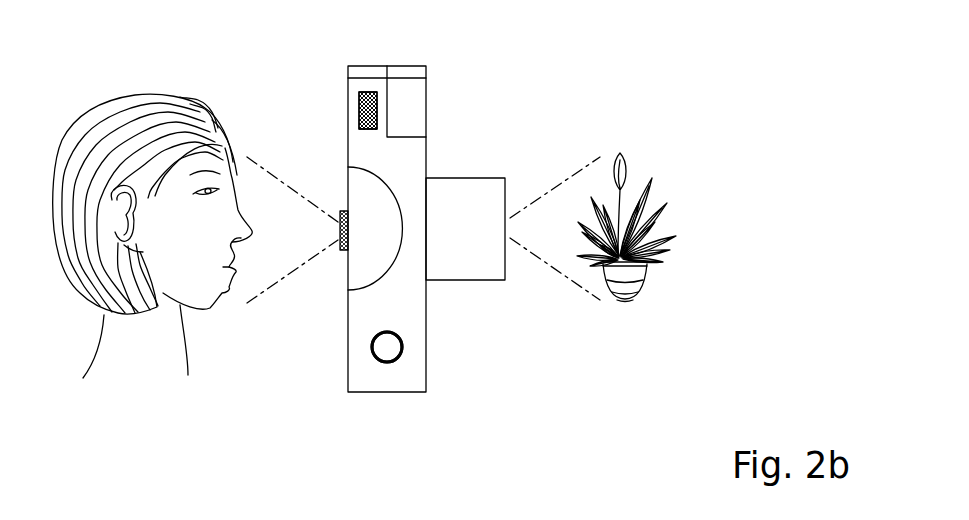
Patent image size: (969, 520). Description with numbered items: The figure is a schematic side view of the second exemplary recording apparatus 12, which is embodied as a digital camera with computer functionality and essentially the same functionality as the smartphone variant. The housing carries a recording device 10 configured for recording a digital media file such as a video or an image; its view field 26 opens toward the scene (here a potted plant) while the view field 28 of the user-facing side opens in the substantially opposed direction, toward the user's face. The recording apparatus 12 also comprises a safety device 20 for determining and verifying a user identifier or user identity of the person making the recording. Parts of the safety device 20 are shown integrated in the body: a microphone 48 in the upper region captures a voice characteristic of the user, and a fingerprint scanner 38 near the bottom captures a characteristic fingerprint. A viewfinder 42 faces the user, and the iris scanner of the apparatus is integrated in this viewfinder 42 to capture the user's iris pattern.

The recording device 10 is at (462, 245).
The recording apparatus 12 is at (536, 146).
The safety device 20 is at (380, 227).
The microphone 48 is at (362, 112).
The fingerprint scanner 38 is at (387, 347).
The viewfinder 42 is at (346, 212).
The view field of the recording device 26 is at (570, 285).
The view field of the camera 28 is at (283, 278).